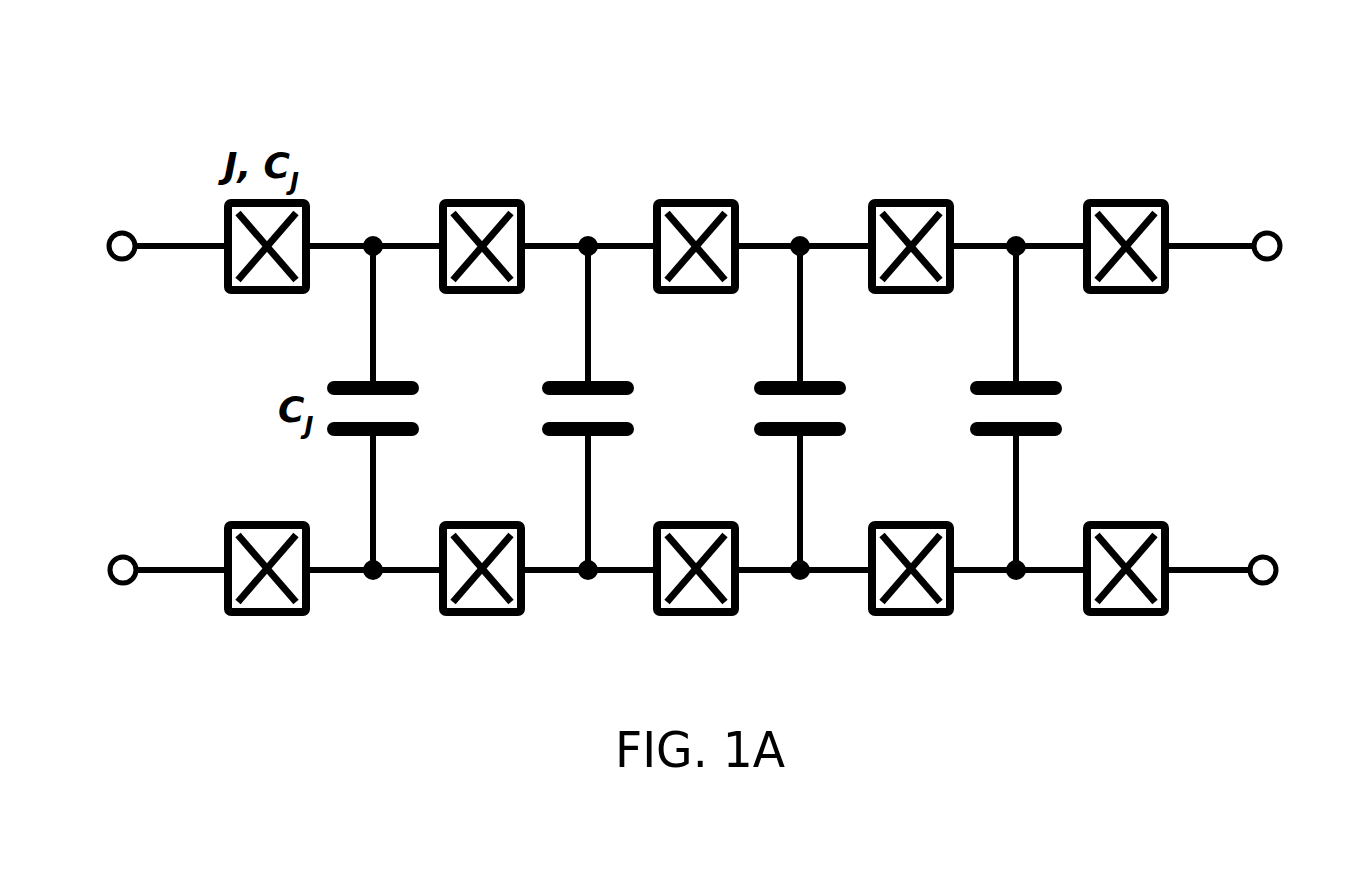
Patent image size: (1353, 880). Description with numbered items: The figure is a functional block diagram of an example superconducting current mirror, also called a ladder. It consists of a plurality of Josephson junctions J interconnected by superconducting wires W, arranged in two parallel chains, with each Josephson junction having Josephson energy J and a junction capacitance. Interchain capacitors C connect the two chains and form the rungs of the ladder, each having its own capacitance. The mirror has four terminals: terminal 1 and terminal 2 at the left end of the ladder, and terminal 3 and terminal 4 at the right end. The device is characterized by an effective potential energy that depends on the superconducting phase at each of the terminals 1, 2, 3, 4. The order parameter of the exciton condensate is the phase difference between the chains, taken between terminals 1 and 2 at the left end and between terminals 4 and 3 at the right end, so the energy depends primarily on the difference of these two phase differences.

The terminal 1 is at (102, 247).
The terminal 2 is at (102, 571).
The terminal 3 is at (1292, 571).
The terminal 4 is at (1294, 247).